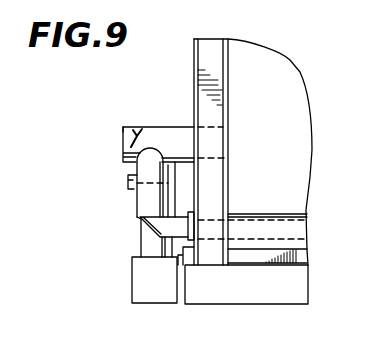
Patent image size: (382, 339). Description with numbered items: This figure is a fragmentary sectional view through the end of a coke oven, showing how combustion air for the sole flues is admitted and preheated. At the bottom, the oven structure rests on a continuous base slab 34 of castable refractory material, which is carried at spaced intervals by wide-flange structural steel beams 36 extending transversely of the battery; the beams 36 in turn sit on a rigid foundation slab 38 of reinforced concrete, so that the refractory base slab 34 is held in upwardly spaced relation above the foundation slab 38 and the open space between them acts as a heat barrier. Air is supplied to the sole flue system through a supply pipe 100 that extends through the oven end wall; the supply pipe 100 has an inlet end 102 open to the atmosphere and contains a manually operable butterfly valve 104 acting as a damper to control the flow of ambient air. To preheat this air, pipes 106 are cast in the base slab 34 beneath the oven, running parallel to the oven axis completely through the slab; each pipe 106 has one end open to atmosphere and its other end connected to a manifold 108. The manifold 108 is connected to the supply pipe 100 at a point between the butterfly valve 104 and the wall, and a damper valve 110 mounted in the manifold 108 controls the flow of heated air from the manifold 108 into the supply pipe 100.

The supply pipe 100 is at (188, 127).
The inlet end 102 is at (122, 128).
The butterfly valve 104 is at (130, 140).
The pipe 106 is at (136, 216).
The manifold 108 is at (133, 288).
The damper valve 110 is at (126, 178).
The base slab 34 is at (296, 214).
The structural steel beam 36 is at (300, 257).
The foundation slab 38 is at (303, 290).